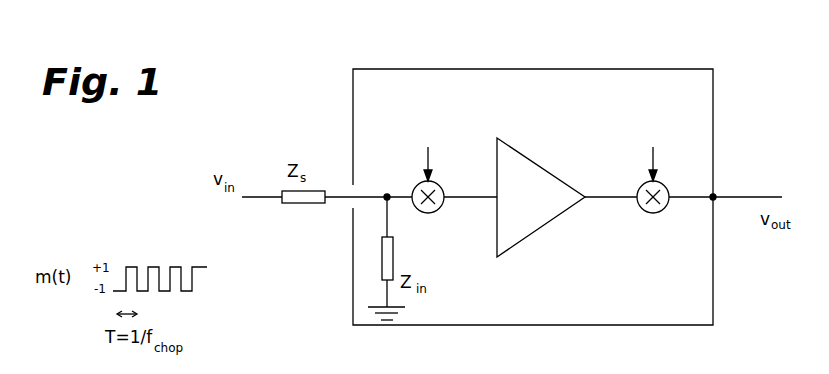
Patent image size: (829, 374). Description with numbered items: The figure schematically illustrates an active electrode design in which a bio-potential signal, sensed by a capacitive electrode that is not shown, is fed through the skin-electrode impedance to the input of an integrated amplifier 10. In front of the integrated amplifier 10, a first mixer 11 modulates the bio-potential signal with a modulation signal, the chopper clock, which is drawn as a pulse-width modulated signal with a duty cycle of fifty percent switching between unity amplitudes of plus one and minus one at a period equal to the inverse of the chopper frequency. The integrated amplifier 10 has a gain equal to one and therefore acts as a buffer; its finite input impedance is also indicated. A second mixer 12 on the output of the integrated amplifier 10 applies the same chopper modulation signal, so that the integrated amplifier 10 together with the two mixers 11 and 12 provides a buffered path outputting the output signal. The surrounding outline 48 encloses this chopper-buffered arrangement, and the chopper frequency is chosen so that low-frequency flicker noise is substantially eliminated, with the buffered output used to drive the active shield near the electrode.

The integrated amplifier 10 is at (530, 235).
The first mixer 11 is at (428, 214).
The second mixer 12 is at (644, 213).
The chopper amplifier circuit 48 is at (670, 63).